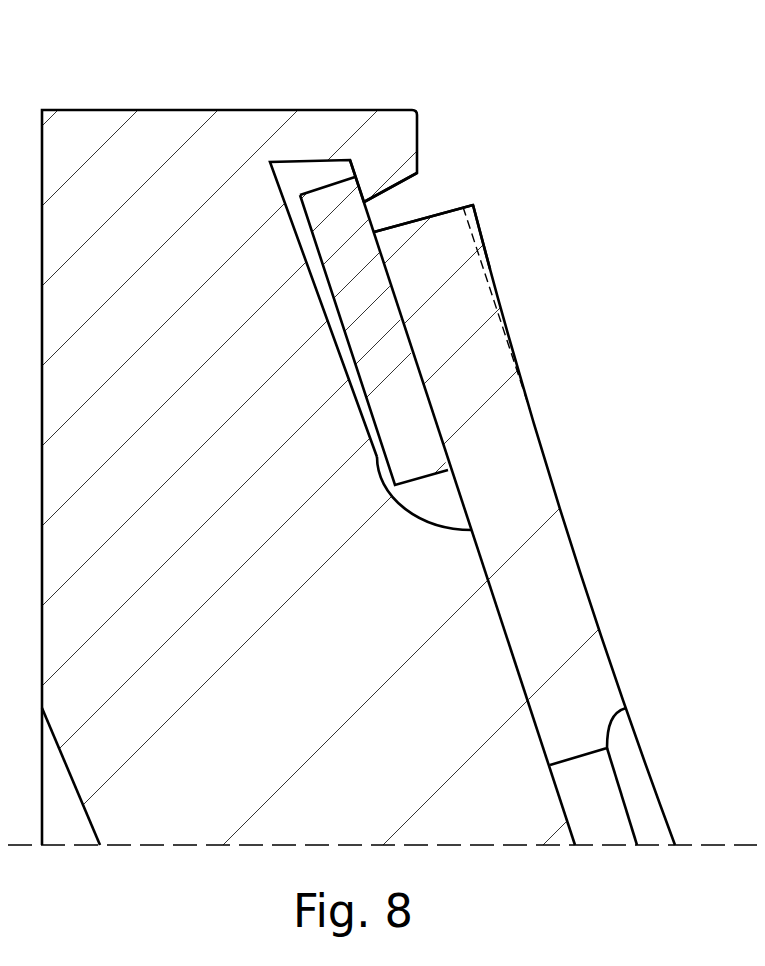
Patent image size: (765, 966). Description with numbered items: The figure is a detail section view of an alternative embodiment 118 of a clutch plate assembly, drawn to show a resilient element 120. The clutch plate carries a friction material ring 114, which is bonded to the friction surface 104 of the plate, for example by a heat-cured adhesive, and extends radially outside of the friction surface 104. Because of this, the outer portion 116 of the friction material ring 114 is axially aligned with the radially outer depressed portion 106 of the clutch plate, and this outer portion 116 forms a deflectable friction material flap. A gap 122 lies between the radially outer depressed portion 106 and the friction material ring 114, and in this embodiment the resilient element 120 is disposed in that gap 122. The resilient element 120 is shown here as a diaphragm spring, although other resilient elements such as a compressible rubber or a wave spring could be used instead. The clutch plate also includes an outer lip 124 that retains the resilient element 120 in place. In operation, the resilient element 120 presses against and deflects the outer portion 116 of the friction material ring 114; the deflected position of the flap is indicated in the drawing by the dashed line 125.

The friction surface 104 is at (498, 613).
The radially outer depressed portion 106 is at (323, 312).
The friction material ring 114 is at (578, 620).
The outer portion 116 is at (458, 268).
The alternative embodiment 118 is at (472, 171).
The resilient element 120 is at (423, 450).
The gap 122 is at (302, 240).
The outer lip 124 is at (392, 150).
The dashed line 125 is at (495, 315).